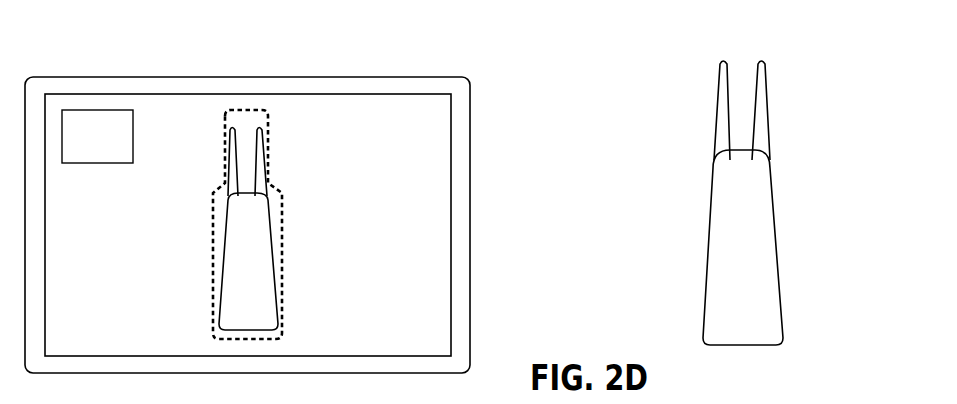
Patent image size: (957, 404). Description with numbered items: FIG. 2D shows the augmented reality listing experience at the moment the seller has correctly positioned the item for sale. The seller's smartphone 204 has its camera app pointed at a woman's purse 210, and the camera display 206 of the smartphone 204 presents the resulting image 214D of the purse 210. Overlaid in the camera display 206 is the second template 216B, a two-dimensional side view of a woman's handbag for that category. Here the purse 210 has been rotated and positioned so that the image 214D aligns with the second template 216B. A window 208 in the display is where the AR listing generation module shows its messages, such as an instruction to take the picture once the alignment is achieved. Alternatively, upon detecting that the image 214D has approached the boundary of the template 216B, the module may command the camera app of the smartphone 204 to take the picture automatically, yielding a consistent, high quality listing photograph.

The smartphone 204 is at (405, 77).
The camera display 206 is at (451, 182).
The window 208 is at (100, 110).
The woman's purse 210 is at (772, 208).
The image of the purse 214D is at (270, 258).
The second template 216B is at (265, 111).